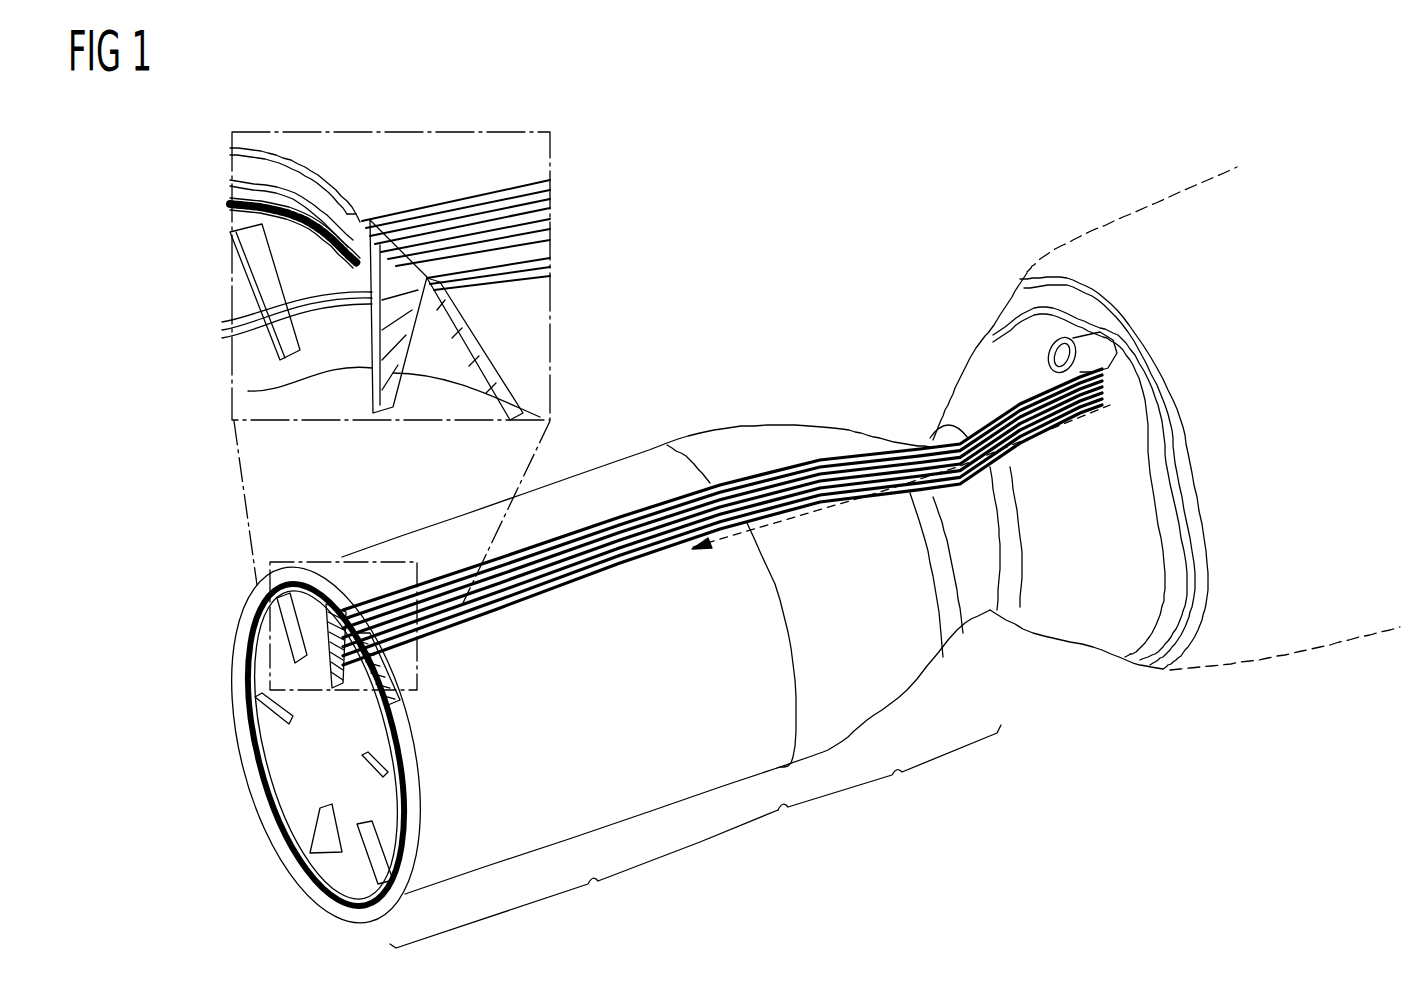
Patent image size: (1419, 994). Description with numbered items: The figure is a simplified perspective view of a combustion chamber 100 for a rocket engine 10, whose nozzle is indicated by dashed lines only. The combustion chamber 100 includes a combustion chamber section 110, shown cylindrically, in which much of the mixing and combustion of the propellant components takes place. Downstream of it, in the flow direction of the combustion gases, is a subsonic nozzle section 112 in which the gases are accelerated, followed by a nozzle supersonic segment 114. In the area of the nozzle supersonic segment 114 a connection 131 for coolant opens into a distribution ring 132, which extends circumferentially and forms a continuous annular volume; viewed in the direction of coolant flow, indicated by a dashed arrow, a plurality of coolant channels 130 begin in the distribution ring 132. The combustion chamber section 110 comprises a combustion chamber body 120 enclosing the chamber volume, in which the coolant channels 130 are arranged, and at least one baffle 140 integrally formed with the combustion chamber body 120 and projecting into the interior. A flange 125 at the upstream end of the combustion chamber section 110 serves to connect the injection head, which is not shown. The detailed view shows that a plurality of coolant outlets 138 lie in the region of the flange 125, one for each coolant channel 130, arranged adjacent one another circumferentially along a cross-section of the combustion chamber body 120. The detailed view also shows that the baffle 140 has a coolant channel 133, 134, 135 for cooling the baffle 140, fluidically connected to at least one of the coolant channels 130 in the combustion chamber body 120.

The rocket engine 10 is at (121, 135).
The combustion chamber 100 is at (1077, 788).
The combustion chamber section 110 is at (584, 879).
The subsonic nozzle section 112 is at (889, 772).
The nozzle supersonic segment 114 is at (1056, 627).
The combustion chamber body 120 is at (637, 462).
The flange 125 is at (245, 600).
The coolant channels 130 is at (770, 480).
The connection for coolant 131 is at (1068, 342).
The distribution ring 132 is at (1160, 456).
The coolant channel of the baffle 133 is at (538, 409).
The coolant channel of the baffle 134 is at (248, 391).
The coolant channel of the baffle 135 is at (292, 335).
The coolant outlets 138 is at (240, 210).
The baffle 140 is at (385, 868).